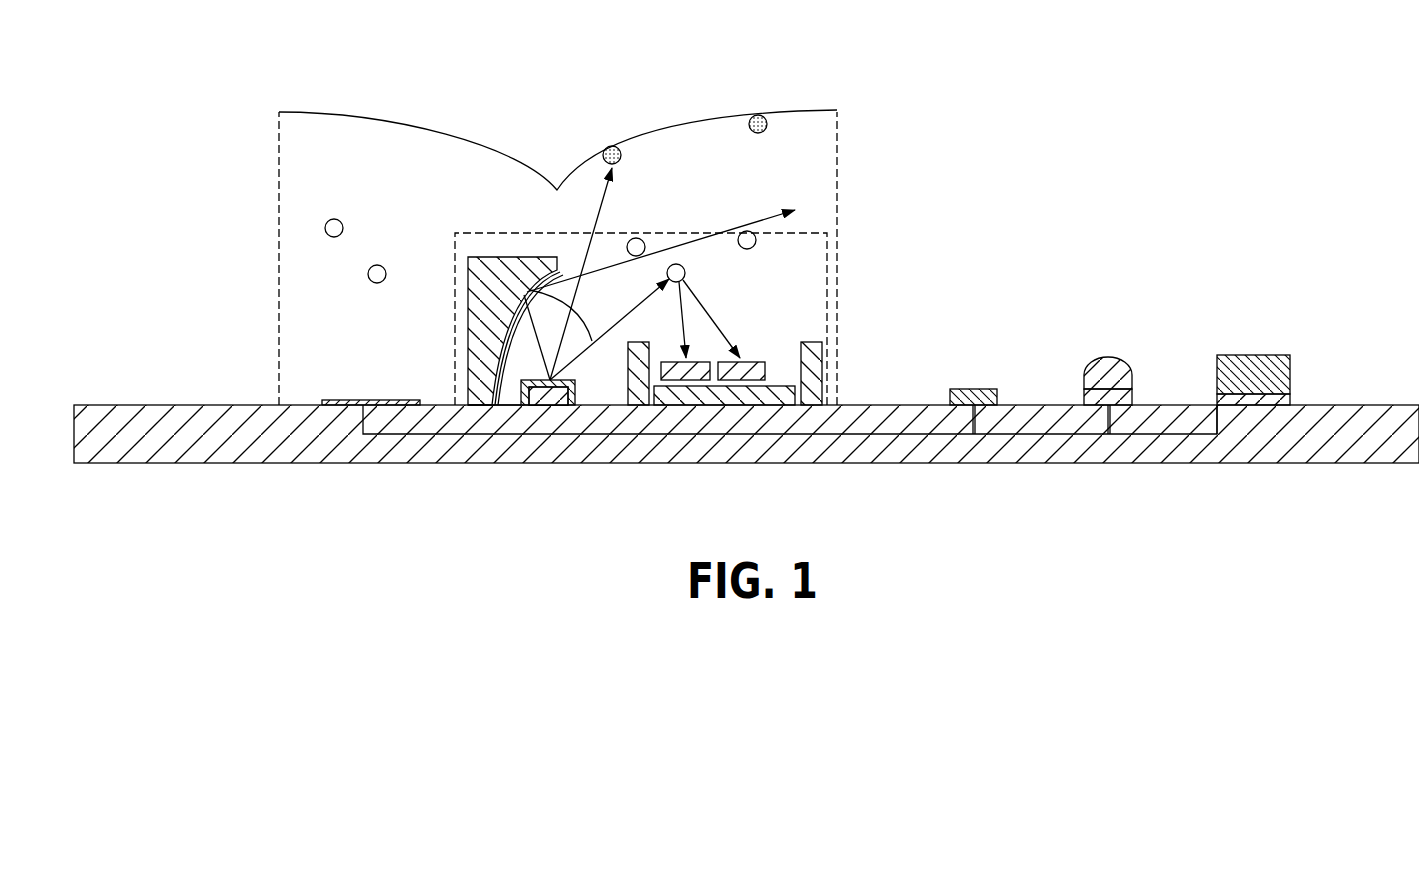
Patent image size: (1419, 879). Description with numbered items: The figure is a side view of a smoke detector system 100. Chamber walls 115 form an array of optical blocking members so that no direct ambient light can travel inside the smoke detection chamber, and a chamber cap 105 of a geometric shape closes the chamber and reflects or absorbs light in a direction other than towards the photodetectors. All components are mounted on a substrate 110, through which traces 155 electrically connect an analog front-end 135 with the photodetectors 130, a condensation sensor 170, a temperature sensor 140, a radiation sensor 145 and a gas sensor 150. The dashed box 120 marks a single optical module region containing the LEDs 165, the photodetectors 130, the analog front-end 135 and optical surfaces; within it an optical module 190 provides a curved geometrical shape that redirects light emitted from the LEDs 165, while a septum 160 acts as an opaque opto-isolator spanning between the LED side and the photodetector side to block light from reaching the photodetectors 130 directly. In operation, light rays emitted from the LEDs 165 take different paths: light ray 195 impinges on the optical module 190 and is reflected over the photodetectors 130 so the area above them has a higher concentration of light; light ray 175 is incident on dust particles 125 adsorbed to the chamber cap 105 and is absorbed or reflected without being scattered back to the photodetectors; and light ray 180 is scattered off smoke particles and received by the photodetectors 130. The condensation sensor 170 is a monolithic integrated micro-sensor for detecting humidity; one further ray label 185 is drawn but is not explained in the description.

The smoke detector system 100 is at (136, 72).
The chamber cap 105 is at (619, 144).
The substrate 110 is at (1040, 463).
The chamber walls 115 is at (279, 270).
The dashed box 120 is at (506, 257).
The dust particle 125 is at (766, 116).
The photodetectors 130 is at (700, 362).
The analog front-end 135 is at (705, 406).
The temperature sensor 140 is at (975, 389).
The radiation sensor 145 is at (1112, 358).
The gas sensor 150 is at (1258, 355).
The traces 155 is at (1222, 420).
The septum 160 is at (640, 406).
The LEDs 165 is at (537, 406).
The condensation sensor 170 is at (392, 406).
The light ray 175 is at (606, 197).
The light ray 180 is at (527, 292).
The scattered light beam 185 is at (678, 330).
The optical module 190 is at (477, 406).
The light ray 195 is at (692, 243).